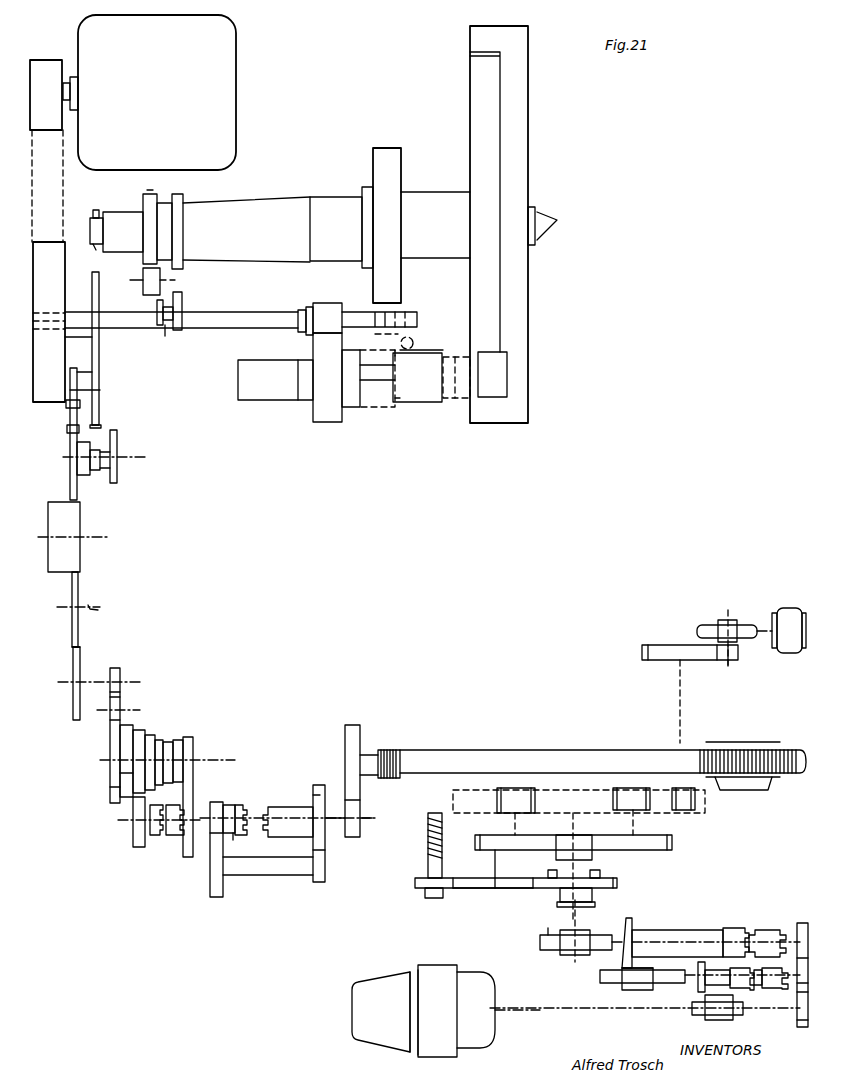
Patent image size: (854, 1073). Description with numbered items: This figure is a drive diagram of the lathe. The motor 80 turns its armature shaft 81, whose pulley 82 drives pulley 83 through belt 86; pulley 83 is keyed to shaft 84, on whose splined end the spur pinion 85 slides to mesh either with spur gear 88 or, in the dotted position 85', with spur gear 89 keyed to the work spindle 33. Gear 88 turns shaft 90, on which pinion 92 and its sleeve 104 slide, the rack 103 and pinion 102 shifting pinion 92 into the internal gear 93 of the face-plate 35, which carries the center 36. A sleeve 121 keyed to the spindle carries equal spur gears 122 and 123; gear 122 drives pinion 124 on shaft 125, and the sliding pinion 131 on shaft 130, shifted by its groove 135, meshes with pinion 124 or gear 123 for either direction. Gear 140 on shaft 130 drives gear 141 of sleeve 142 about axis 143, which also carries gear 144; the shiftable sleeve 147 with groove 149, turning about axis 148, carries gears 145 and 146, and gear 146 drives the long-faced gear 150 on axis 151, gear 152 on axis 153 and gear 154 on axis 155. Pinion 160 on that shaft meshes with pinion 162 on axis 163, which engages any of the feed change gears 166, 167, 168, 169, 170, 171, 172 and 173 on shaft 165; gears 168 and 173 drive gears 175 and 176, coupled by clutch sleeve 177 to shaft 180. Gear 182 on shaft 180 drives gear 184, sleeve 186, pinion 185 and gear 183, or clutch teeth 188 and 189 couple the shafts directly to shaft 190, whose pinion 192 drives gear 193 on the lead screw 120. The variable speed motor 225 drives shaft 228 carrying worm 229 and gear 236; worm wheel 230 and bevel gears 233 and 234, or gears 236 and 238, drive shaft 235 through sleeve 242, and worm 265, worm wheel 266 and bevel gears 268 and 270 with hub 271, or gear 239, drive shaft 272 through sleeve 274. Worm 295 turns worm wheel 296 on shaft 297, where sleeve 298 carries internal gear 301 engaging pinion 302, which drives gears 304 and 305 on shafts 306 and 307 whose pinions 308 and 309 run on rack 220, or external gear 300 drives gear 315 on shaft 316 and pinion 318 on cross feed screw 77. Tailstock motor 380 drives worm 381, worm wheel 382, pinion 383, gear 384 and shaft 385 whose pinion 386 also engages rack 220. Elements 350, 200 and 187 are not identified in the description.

The motor 80 is at (230, 64).
The pulley 82 is at (43, 68).
The armature shaft 81 is at (72, 82).
The belt 86 is at (66, 196).
The pulley 83 is at (40, 342).
The motor 350 is at (96, 215).
The spur gear 122 is at (146, 200).
The sleeve 121 is at (176, 200).
The spur gear 123 is at (183, 203).
The work spindle 33 is at (333, 197).
The spur gear 89 is at (406, 183).
The internal gear 93 is at (483, 57).
The face-plate 35 is at (528, 130).
The center 36 is at (556, 220).
The shaft 84 is at (256, 312).
The spur gear 140 is at (94, 276).
The shaft 125 is at (133, 280).
The spur pinion 124 is at (143, 288).
The shaft 130 is at (157, 310).
The spur pinion 131 is at (180, 302).
The peripheral groove 135 is at (165, 336).
The spur pinion 85 is at (334, 306).
The spur gear 88 is at (300, 410).
The spur pinion (shifted position) 85' is at (396, 310).
The spur pinion 102 is at (414, 339).
The rack 103 is at (430, 350).
The shaft 90 is at (378, 402).
The sleeve 104 is at (430, 403).
The pinion 92 is at (455, 402).
The sleeve 142 is at (80, 372).
The spur gear 141 is at (97, 360).
The axis 143 is at (100, 390).
The spur gear 144 is at (70, 404).
The gear 146 is at (70, 430).
The peripheral groove 149 is at (94, 440).
The sleeve or hub 147 is at (102, 472).
The gear 145 is at (118, 442).
The axis 148 is at (130, 458).
The long-faced gear 150 is at (58, 502).
The axis 151 is at (98, 538).
The gear 152 is at (78, 598).
The axis 153 is at (98, 610).
The gear 154 is at (72, 650).
The axis (shaft) 155 is at (88, 674).
The spur pinion 160 is at (120, 674).
The spur pinion 162 is at (114, 706).
The axis 163 is at (112, 718).
The feed change gear 168 is at (128, 746).
The feed change gear 169 is at (145, 724).
The feed change gear 170 is at (155, 736).
The feed change gear 171 is at (165, 745).
The feed change gear 172 is at (174, 746).
The feed change gear 173 is at (188, 746).
The shaft 165 is at (206, 760).
The feed change gear 167 is at (126, 773).
The feed change gear 166 is at (114, 786).
The spur gear 175 is at (134, 832).
The shiftable sleeve 177 is at (168, 840).
The spur gear 176 is at (186, 860).
The spur gear 184 is at (212, 892).
The shaft 180 is at (202, 812).
The spur gear 182 is at (230, 802).
The face clutch teeth 188 is at (245, 806).
The pin 187 is at (234, 838).
The face clutch teeth 189 is at (270, 838).
The gear 183 is at (313, 795).
The spur pinion 185 is at (318, 887).
The sleeve 186 is at (280, 876).
The shaft 190 is at (334, 814).
The spur pinion 192 is at (362, 836).
The spur gear 193 is at (358, 738).
The lead screw 120 is at (570, 750).
The knurled knob 200 is at (766, 742).
The shaft 385 is at (682, 736).
The motor 380 is at (791, 608).
The worm wheel 382 is at (705, 625).
The worm 381 is at (733, 620).
The spur gear 384 is at (666, 656).
The pinion 383 is at (735, 662).
The rack 220 is at (455, 792).
The spur pinion 309 is at (512, 788).
The spur pinion 308 is at (632, 790).
The pinion 386 is at (688, 811).
The shaft 306 is at (632, 814).
The shaft 307 is at (516, 815).
The wide-faced spur pinion 302 is at (565, 838).
The spur gear 304 is at (665, 846).
The spur gear 305 is at (494, 856).
The internal gear 301 is at (550, 873).
The external spur gear 300 is at (617, 882).
The sleeve 298 is at (594, 896).
The spur gear 315 is at (532, 890).
The shaft 316 is at (494, 890).
The spur pinion 318 is at (422, 898).
The screw shaft 77 is at (428, 840).
The worm wheel 296 is at (548, 932).
The worm 295 is at (561, 954).
The shaft 297 is at (578, 930).
The bevel gear 270 is at (631, 926).
The sleeve or hub 271 is at (665, 936).
The shaft 272 is at (694, 932).
The sleeve 274 is at (740, 928).
The spur gear 239 is at (801, 923).
The bevel gear 268 is at (636, 968).
The worm wheel 266 is at (605, 980).
The worm 265 is at (636, 990).
The bevel gear 233 is at (700, 988).
The bevel gear 234 is at (700, 970).
The shaft 235 is at (742, 970).
The sleeve member 242 is at (765, 987).
The shaft 228 is at (641, 1010).
The worm 229 is at (704, 1018).
The worm wheel 230 is at (740, 1020).
The spur gear 238 is at (800, 988).
The spur gear 236 is at (800, 1026).
The variable speed motor 225 is at (390, 1044).